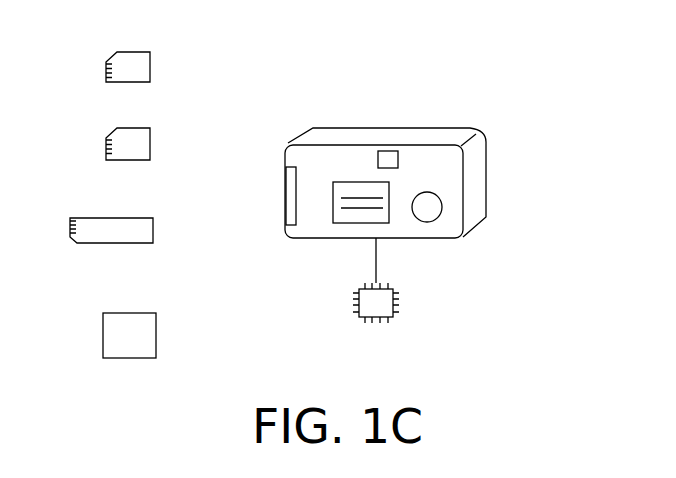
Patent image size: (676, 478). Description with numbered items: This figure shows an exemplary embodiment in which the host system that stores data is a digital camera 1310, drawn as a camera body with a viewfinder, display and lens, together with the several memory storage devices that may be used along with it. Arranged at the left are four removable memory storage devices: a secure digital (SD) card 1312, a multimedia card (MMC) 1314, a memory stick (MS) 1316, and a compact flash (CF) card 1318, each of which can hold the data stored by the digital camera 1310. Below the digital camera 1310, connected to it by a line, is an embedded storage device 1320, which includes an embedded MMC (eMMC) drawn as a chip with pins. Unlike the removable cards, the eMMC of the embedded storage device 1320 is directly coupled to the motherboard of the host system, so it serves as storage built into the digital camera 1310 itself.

The digital camera 1310 is at (486, 170).
The secure digital (SD) card 1312 is at (150, 57).
The multimedia card (MMC) 1314 is at (150, 135).
The memory stick (MS) 1316 is at (153, 230).
The compact flash (CF) card 1318 is at (156, 327).
The embedded storage device 1320 is at (400, 303).